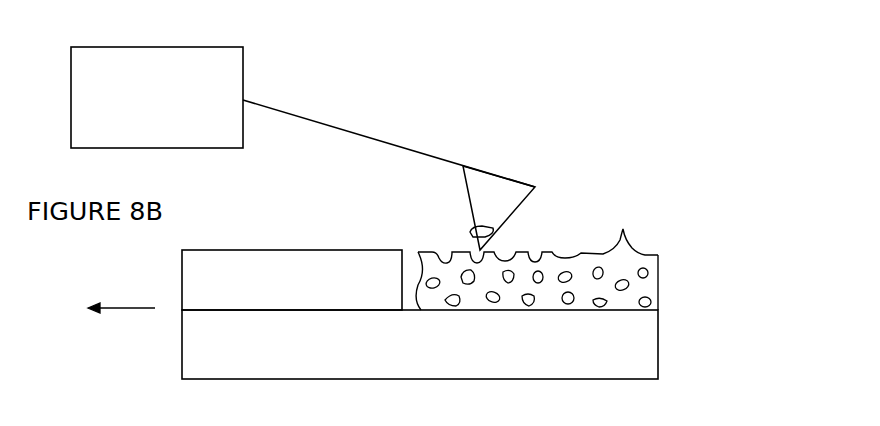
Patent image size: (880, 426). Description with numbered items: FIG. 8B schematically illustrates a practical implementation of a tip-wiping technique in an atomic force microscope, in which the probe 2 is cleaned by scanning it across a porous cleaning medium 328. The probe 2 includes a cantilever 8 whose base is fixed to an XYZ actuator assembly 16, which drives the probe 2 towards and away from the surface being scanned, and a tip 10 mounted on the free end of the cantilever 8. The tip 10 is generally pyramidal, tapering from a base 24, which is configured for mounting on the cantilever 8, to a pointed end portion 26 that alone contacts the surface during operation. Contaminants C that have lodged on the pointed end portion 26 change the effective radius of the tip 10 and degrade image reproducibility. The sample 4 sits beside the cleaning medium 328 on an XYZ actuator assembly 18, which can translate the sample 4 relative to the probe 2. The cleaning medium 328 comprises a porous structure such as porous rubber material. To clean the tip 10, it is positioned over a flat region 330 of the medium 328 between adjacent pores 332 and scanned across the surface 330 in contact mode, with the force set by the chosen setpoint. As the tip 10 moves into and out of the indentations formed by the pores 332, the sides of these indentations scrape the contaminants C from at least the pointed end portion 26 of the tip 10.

The probe 2 is at (365, 112).
The sample 4 is at (181, 279).
The cantilever 8 is at (290, 112).
The tip 10 is at (471, 192).
The XYZ actuator assembly 16 is at (243, 61).
The XYZ actuator assembly 18 is at (181, 344).
The base 24 is at (470, 192).
The pointed end portion 26 is at (475, 242).
The contaminants C is at (431, 217).
The cleaning medium 328 is at (598, 266).
The flat region 330 is at (544, 252).
The pores 332 is at (677, 315).